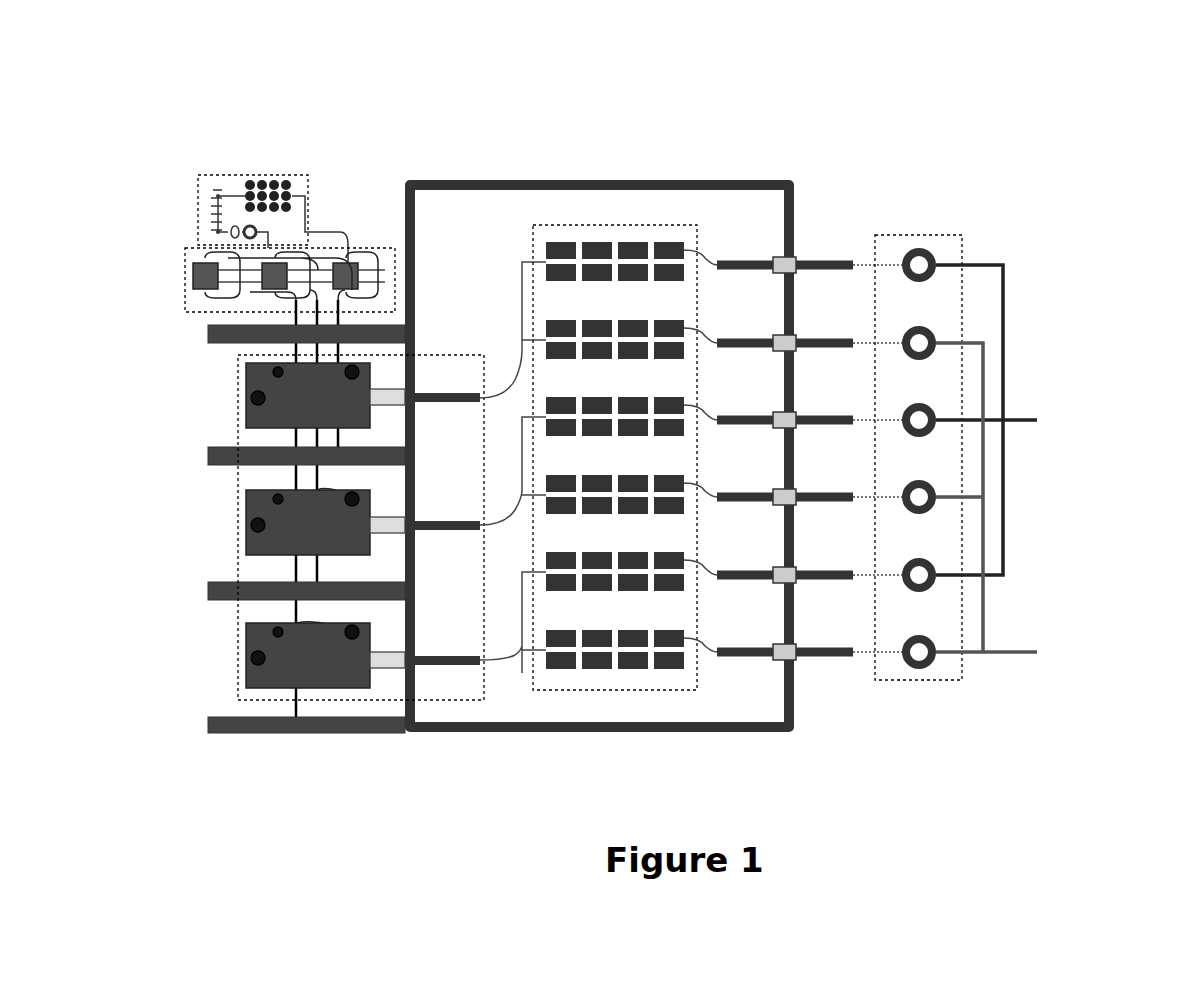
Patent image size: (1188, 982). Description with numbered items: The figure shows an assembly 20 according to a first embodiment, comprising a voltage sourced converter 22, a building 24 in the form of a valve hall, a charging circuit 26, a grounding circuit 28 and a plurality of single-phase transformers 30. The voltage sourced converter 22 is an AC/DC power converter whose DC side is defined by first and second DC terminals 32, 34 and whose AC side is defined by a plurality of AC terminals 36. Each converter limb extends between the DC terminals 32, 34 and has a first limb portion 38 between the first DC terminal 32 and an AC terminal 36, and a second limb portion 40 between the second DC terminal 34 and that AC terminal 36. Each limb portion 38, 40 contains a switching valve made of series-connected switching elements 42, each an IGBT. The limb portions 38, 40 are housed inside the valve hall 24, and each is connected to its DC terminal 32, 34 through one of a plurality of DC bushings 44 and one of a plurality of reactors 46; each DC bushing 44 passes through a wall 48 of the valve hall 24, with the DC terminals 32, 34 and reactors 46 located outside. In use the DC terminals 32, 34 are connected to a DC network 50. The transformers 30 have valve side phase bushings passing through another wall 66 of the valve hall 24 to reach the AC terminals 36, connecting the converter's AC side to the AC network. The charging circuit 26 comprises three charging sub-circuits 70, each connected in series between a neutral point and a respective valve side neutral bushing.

The assembly 20 is at (325, 130).
The voltage sourced converter 22 is at (750, 687).
The building 24 is at (488, 735).
The charging circuit 26 is at (183, 274).
The grounding circuit 28 is at (193, 184).
The single-phase transformers 30 is at (240, 392).
The first DC terminal 32 is at (1012, 410).
The second DC terminal 34 is at (993, 640).
The AC terminals 36 is at (517, 355).
The first limb portion 38 is at (690, 276).
The second limb portion 40 is at (693, 356).
The series-connected switching elements 42 is at (612, 343).
The DC bushings 44 is at (818, 272).
The reactors 46 is at (946, 247).
The wall 48 is at (791, 202).
The DC network 50 is at (1045, 420).
The wall 66 is at (416, 212).
The charging sub-circuits 70 is at (265, 297).